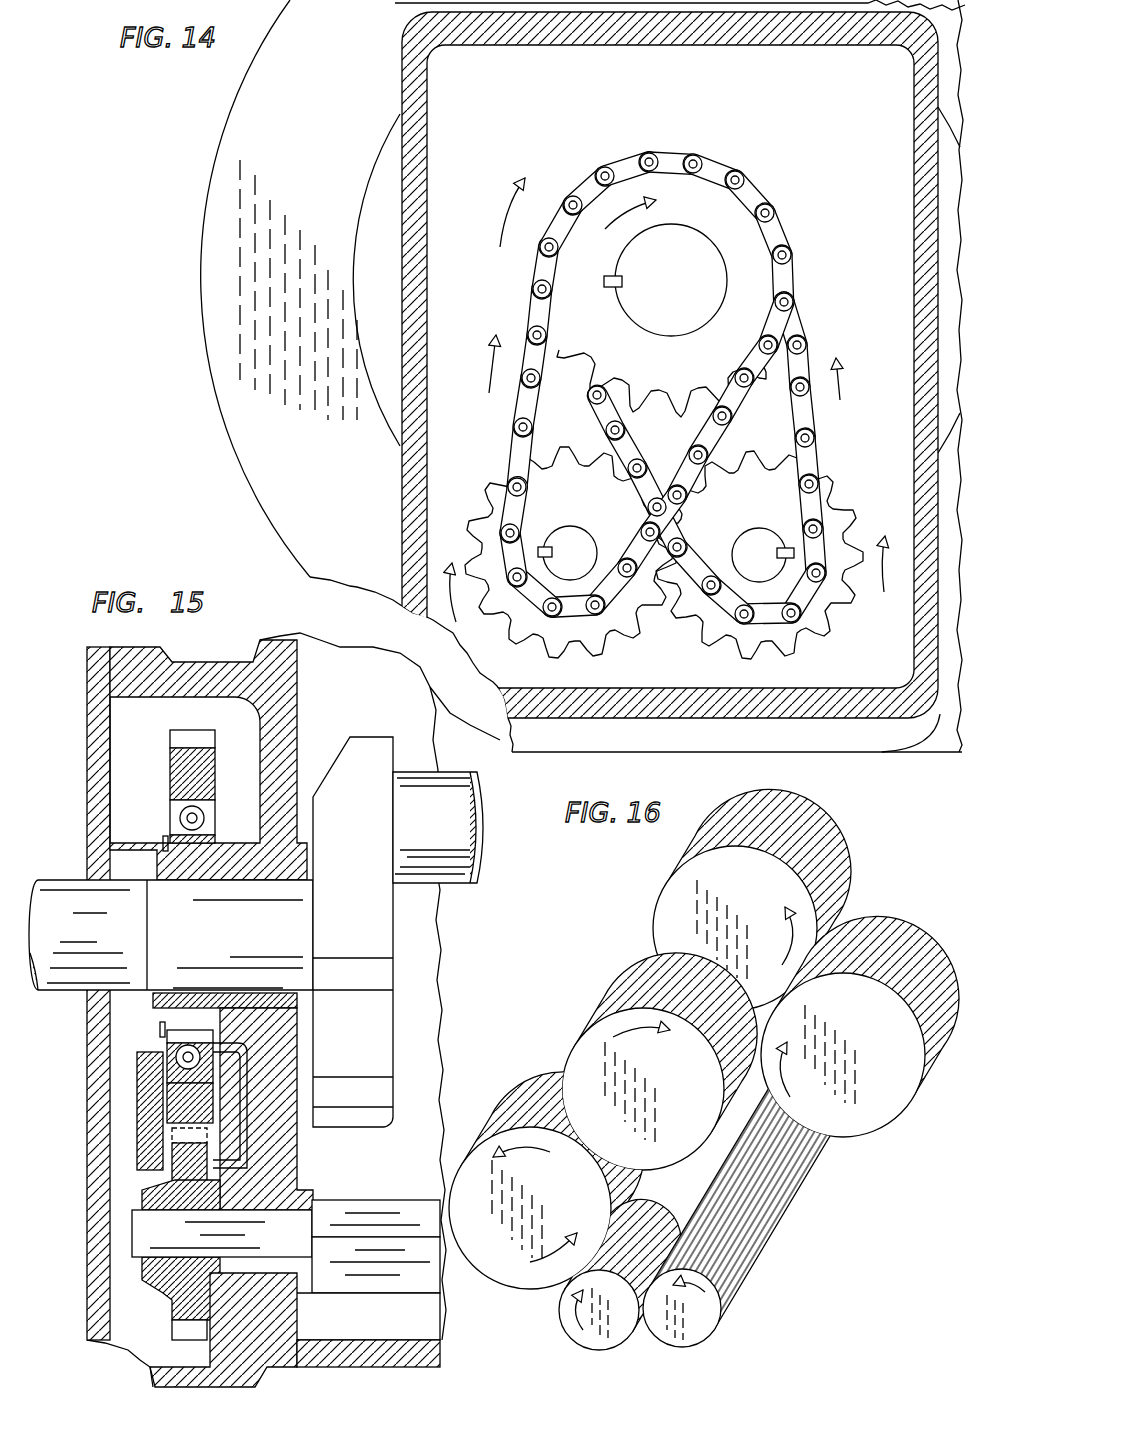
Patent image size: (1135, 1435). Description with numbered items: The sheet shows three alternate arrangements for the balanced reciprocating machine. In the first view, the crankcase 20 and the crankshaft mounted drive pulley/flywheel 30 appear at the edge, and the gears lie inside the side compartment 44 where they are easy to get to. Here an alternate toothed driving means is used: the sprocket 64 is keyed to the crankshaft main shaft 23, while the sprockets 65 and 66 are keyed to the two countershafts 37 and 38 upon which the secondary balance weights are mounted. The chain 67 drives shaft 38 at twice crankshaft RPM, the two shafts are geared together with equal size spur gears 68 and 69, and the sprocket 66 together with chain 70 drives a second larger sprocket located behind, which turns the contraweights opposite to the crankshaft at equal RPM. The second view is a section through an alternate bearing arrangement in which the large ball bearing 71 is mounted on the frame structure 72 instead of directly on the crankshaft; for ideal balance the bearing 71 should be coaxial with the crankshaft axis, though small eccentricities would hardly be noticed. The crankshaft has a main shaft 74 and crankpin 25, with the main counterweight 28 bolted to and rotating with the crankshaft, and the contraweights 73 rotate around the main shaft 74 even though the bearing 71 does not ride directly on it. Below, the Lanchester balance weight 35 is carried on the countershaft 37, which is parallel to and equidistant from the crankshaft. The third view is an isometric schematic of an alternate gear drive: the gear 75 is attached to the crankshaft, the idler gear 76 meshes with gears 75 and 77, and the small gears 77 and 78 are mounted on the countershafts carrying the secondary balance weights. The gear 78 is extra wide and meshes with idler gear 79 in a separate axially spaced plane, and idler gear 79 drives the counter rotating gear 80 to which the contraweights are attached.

In FIG. 14, the crankcase 20 is at (412, 77).
In FIG. 14, the side compartment 44 is at (781, 83).
In FIG. 14, the drive pulley/flywheel 30 is at (222, 310).
In FIG. 14, the main shaft 23 is at (662, 308).
In FIG. 14, the sprocket 64 is at (670, 388).
In FIG. 14, the chain 67 is at (544, 309).
In FIG. 14, the chain 70 is at (814, 411).
In FIG. 14, the sprocket 65 is at (558, 567).
In FIG. 14, the sprocket 66 is at (774, 571).
In FIG. 14, the shaft 37 is at (771, 569).
In FIG. 15, the shaft 37 is at (145, 1237).
In FIG. 14, the shaft 38 is at (587, 565).
In FIG. 14, the spur gear 68 is at (560, 638).
In FIG. 14, the spur gear 69 is at (816, 627).
In FIG. 15, the frame structure 72 is at (287, 753).
In FIG. 15, the large ball bearing 71 is at (167, 800).
In FIG. 15, the crankpin 25 is at (438, 827).
In FIG. 15, the main shaft 74 is at (171, 935).
In FIG. 15, the contraweights 73 is at (147, 1112).
In FIG. 15, the main counterweight 28 is at (340, 1097).
In FIG. 15, the Lanchester balance weight 35 is at (355, 1273).
In FIG. 16, the counter rotating gear 80 is at (695, 913).
In FIG. 16, the gear 75 is at (580, 1060).
In FIG. 16, the idler gear 79 is at (883, 1100).
In FIG. 16, the idler gear 76 is at (503, 1272).
In FIG. 16, the small gear 77 is at (585, 1335).
In FIG. 16, the small gear 78 is at (707, 1330).